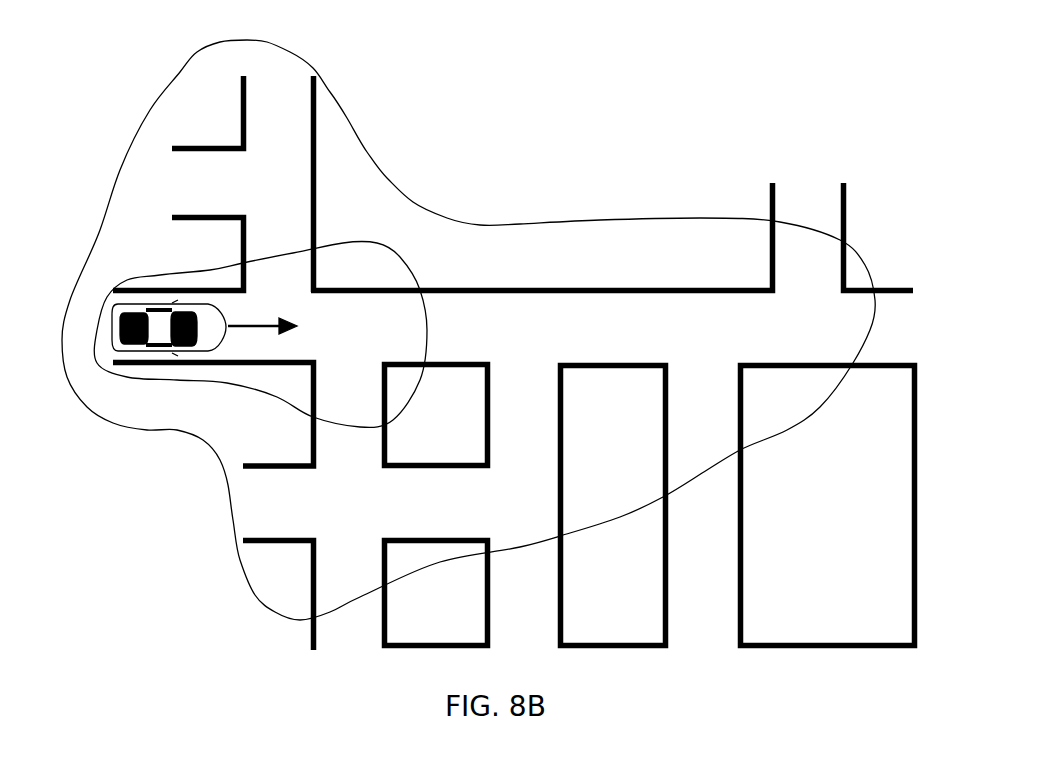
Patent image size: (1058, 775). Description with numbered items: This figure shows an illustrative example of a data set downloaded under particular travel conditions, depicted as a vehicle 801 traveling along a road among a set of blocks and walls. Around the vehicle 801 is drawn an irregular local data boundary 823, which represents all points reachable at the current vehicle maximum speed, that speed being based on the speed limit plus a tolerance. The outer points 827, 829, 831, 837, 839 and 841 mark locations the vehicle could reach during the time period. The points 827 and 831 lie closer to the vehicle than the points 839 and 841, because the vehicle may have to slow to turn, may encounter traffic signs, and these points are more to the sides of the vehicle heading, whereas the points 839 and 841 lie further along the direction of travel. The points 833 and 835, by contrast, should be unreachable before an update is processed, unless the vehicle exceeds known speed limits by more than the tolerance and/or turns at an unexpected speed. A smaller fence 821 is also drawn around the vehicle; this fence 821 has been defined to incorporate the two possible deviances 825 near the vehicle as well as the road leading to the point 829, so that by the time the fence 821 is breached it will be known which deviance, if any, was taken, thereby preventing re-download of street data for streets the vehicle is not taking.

The vehicle 801 is at (150, 303).
The fence 821 is at (252, 388).
The local data boundary 823 is at (528, 229).
The possible deviances 825 is at (287, 273).
The outer point 827 is at (200, 190).
The outer point 829 is at (345, 510).
The outer point 831 is at (250, 492).
The unreachable point 833 is at (358, 632).
The unreachable point 835 is at (528, 630).
The outer point 837 is at (705, 442).
The outer point 839 is at (800, 236).
The outer point 841 is at (824, 326).